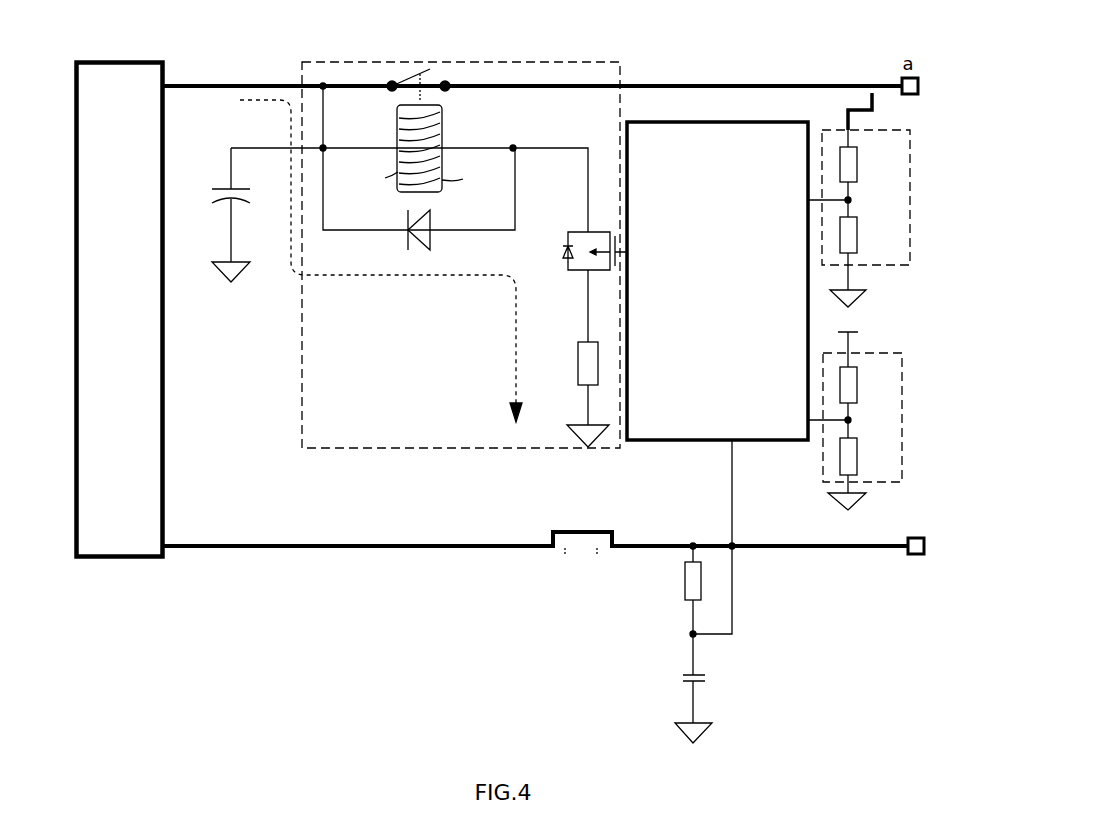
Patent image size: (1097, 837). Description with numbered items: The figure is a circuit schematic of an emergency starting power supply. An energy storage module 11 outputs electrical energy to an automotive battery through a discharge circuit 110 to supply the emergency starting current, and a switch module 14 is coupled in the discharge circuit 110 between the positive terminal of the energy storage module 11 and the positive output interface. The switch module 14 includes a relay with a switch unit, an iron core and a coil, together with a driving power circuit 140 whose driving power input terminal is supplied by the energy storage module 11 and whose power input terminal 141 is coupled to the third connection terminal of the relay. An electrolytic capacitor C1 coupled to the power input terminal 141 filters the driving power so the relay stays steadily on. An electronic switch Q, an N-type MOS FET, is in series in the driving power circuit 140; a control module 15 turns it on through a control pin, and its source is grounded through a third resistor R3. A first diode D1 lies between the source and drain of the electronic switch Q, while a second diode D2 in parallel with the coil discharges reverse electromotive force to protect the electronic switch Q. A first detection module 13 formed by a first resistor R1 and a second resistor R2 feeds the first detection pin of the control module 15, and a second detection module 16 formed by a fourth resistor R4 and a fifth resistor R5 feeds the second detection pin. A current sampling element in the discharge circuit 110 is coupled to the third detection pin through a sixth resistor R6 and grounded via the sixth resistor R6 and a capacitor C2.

The energy storage module 11 is at (93, 60).
The discharge circuit 110 is at (408, 549).
The first detection module 13 is at (861, 226).
The switch module 14 is at (429, 250).
The driving power circuit 140 is at (537, 147).
The power input terminal 141 is at (324, 149).
The control module 15 is at (700, 441).
The second detection module 16 is at (834, 417).
The capacitor C1 is at (247, 215).
The capacitor C2 is at (682, 706).
The first diode D1 is at (557, 251).
The second diode D2 is at (417, 244).
The electronic switch Q is at (594, 237).
The first resistor R1 is at (865, 164).
The second resistor R2 is at (875, 264).
The third resistor R3 is at (577, 358).
The fourth resistor R4 is at (864, 385).
The fifth resistor R5 is at (823, 462).
The sixth resistor R6 is at (677, 609).